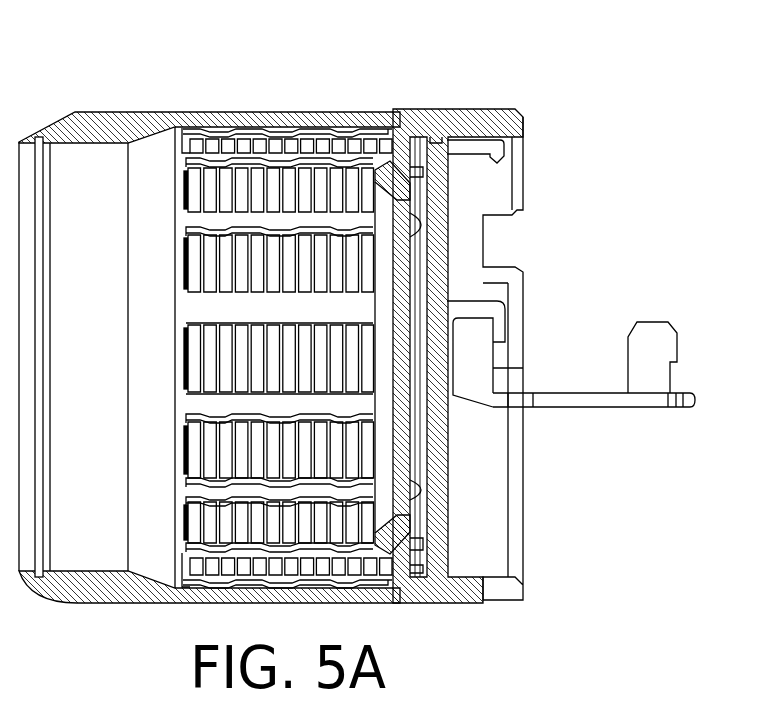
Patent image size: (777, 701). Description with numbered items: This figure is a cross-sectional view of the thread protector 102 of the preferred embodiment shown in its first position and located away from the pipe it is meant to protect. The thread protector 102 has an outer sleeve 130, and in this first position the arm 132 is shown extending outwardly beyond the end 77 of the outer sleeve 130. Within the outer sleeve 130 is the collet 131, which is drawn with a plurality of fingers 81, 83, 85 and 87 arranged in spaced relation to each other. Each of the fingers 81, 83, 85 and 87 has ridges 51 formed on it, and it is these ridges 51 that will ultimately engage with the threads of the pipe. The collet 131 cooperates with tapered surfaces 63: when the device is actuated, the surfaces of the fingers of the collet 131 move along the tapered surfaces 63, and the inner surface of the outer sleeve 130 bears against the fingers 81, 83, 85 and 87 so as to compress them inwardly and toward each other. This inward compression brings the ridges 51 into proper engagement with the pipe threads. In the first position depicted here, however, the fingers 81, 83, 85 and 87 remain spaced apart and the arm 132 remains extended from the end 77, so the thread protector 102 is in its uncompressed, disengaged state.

The thread protector 102 is at (398, 83).
The tapered surfaces 63 is at (155, 113).
The outer sleeve 130 is at (457, 112).
The end of the outer sleeve 77 is at (523, 130).
The arm 132 is at (573, 400).
The ridges 51 is at (300, 133).
The collet 131 is at (218, 133).
The finger 81 is at (183, 180).
The finger 83 is at (183, 264).
The finger 85 is at (183, 362).
The finger 87 is at (183, 457).